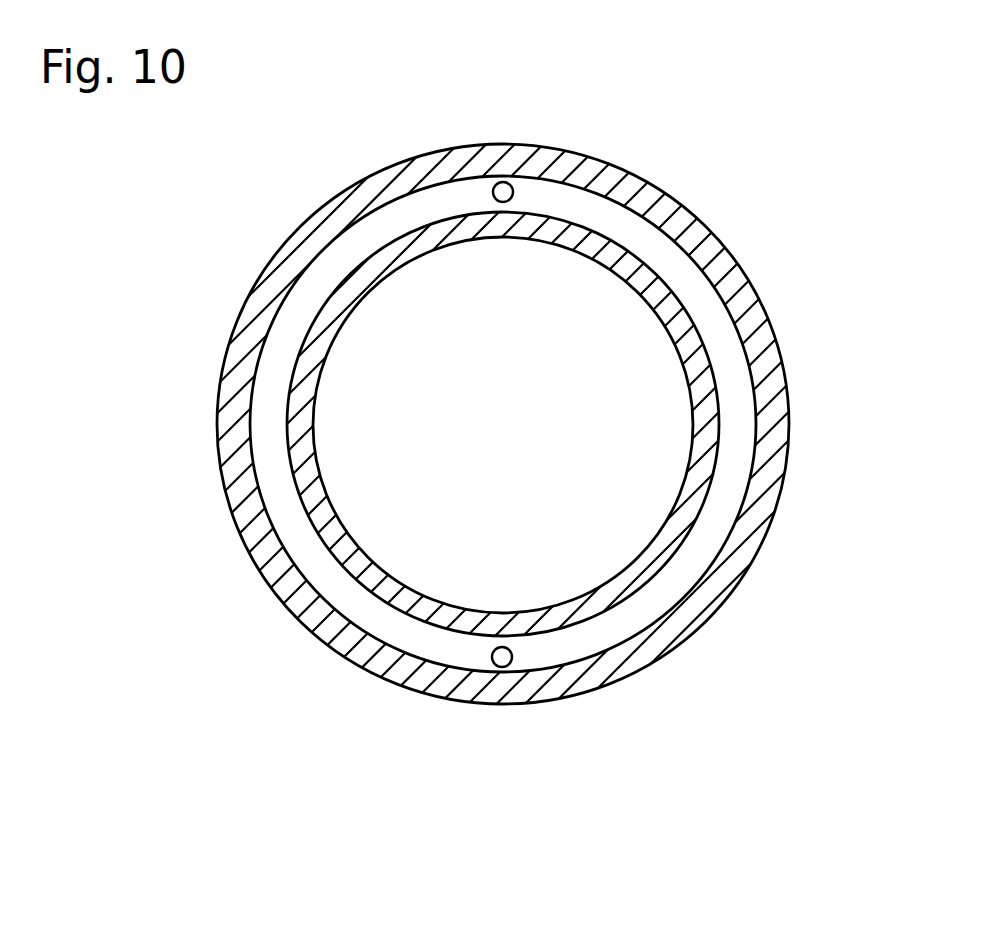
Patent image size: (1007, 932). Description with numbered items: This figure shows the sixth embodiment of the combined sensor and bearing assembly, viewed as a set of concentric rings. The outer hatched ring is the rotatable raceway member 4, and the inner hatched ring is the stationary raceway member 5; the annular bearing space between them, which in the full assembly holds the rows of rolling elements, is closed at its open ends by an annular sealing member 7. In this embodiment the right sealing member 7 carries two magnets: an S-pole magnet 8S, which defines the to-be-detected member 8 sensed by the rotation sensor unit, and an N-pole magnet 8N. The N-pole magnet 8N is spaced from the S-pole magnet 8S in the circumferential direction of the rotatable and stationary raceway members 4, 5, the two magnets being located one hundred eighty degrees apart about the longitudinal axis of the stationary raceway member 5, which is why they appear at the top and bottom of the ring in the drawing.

The rotatable raceway member 4 is at (335, 210).
The stationary raceway member 5 is at (327, 317).
The sealing member 7 is at (272, 365).
The to-be-detected member 8 is at (497, 181).
The S-pole magnet 8S is at (508, 187).
The N-pole magnet 8N is at (498, 657).